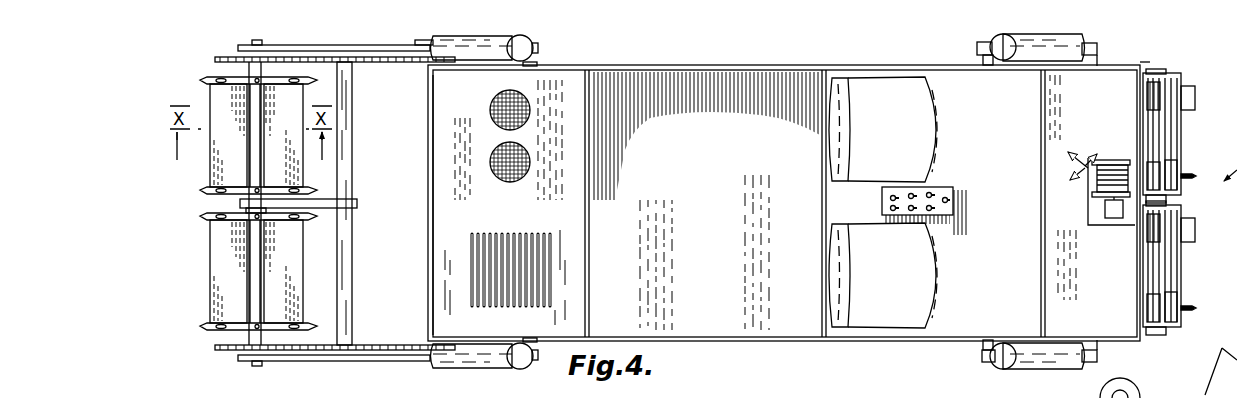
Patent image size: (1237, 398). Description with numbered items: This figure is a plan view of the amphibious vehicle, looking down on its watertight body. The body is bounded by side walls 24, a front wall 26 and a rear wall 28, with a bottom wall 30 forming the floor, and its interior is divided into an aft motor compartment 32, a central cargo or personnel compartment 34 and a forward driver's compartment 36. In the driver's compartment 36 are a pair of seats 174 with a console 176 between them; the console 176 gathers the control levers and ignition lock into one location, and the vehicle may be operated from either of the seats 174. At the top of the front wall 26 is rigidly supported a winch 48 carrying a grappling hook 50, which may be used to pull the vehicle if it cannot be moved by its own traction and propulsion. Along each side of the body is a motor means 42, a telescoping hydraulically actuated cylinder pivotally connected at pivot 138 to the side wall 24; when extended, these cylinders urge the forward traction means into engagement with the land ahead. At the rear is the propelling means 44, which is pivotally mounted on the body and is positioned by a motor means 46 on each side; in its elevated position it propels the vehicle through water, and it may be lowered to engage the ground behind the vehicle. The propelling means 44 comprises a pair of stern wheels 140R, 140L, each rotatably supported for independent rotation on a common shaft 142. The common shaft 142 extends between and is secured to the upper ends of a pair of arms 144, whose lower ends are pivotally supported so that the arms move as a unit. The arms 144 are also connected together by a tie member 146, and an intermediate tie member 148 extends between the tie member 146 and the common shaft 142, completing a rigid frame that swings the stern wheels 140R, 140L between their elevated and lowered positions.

The side walls 24 is at (758, 66).
The front wall 26 is at (1105, 281).
The rear wall 28 is at (432, 185).
The bottom wall 30 is at (717, 203).
The aft motor compartment 32 is at (566, 80).
The central cargo or personnel compartment 34 is at (682, 88).
The forward driver's compartment 36 is at (960, 88).
The motor means 42 is at (1065, 36).
The propelling means 44 is at (190, 322).
The motor means 46 is at (507, 35).
The winch 48 is at (1115, 158).
The grappling hook 50 is at (1088, 160).
The pivotal connection 138 is at (975, 58).
The stern wheel 140L is at (207, 165).
The stern wheel 140R is at (207, 272).
The common shaft 142 is at (263, 42).
The arms 144 is at (328, 46).
The tie member 146 is at (345, 295).
The intermediate tie member 148 is at (357, 204).
The seats 174 is at (938, 125).
The console 176 is at (955, 195).